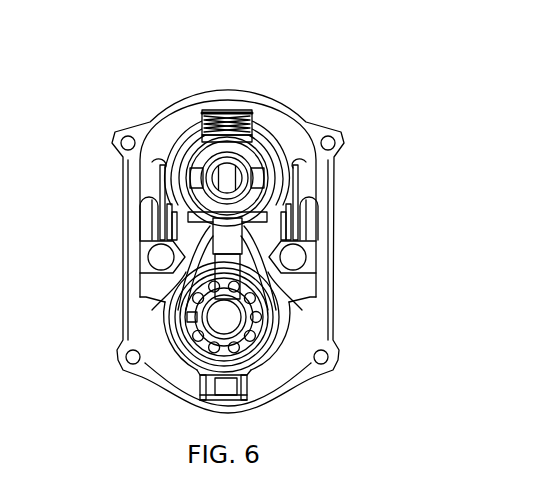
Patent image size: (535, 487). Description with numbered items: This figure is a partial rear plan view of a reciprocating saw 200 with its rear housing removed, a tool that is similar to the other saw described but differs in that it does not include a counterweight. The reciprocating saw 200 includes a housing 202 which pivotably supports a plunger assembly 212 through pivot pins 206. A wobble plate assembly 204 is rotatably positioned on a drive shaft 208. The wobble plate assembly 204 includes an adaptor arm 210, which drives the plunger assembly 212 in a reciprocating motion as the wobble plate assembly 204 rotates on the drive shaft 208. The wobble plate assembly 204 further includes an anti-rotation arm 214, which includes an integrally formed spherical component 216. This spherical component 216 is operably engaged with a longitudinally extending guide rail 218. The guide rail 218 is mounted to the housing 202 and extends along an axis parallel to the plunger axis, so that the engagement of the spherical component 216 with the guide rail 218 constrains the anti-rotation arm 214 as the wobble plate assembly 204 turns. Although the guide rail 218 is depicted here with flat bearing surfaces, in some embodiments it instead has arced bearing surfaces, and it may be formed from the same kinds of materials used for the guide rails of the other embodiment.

The reciprocating saw 200 is at (118, 97).
The housing 202 is at (245, 99).
The wobble plate assembly 204 is at (158, 310).
The pivot pins 206 is at (165, 172).
The drive shaft 208 is at (238, 317).
The adaptor arm 210 is at (272, 228).
The plunger assembly 212 is at (250, 163).
The anti-rotation arm 214 is at (258, 380).
The spherical component 216 is at (203, 376).
The guide rail 218 is at (256, 380).